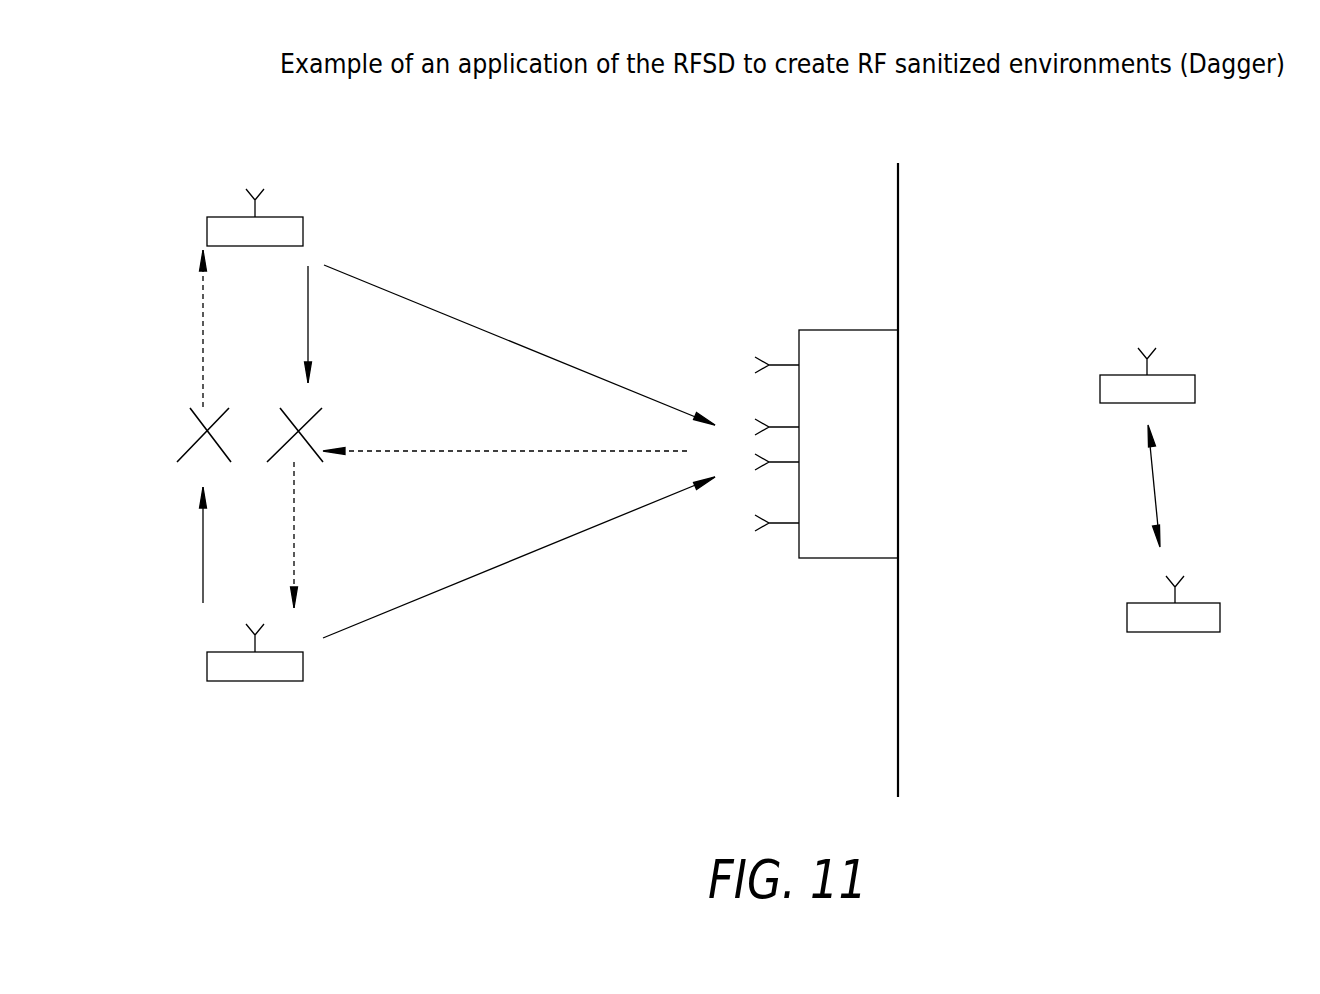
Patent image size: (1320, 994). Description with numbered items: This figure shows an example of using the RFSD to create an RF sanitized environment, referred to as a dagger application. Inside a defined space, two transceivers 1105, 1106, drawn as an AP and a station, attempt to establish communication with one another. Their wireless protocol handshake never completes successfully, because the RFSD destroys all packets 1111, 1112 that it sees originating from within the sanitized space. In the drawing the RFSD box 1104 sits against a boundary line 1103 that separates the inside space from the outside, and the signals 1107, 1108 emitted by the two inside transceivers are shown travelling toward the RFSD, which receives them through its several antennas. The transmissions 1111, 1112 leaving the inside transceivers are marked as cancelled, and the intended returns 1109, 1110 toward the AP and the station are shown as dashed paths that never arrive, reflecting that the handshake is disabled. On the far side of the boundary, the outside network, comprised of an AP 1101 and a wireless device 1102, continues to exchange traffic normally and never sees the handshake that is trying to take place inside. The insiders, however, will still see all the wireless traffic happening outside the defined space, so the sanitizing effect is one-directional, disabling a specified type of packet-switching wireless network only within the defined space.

The AP 1101 is at (1166, 368).
The wireless device 1102 is at (1178, 630).
The wall / boundary of sanitized environment 1103 is at (907, 464).
The RF sanitizing device (RFSD) 1104 is at (826, 426).
The transceiver 1105 is at (274, 210).
The transceiver 1106 is at (259, 678).
The signal from AP received by RFSD 1107 is at (519, 345).
The signal from STA received by RFSD 1108 is at (519, 557).
The blocked transmission to AP 1109 is at (170, 328).
The blocked transmission to STA 1110 is at (331, 535).
The packet 1111 is at (171, 545).
The packet 1112 is at (338, 324).